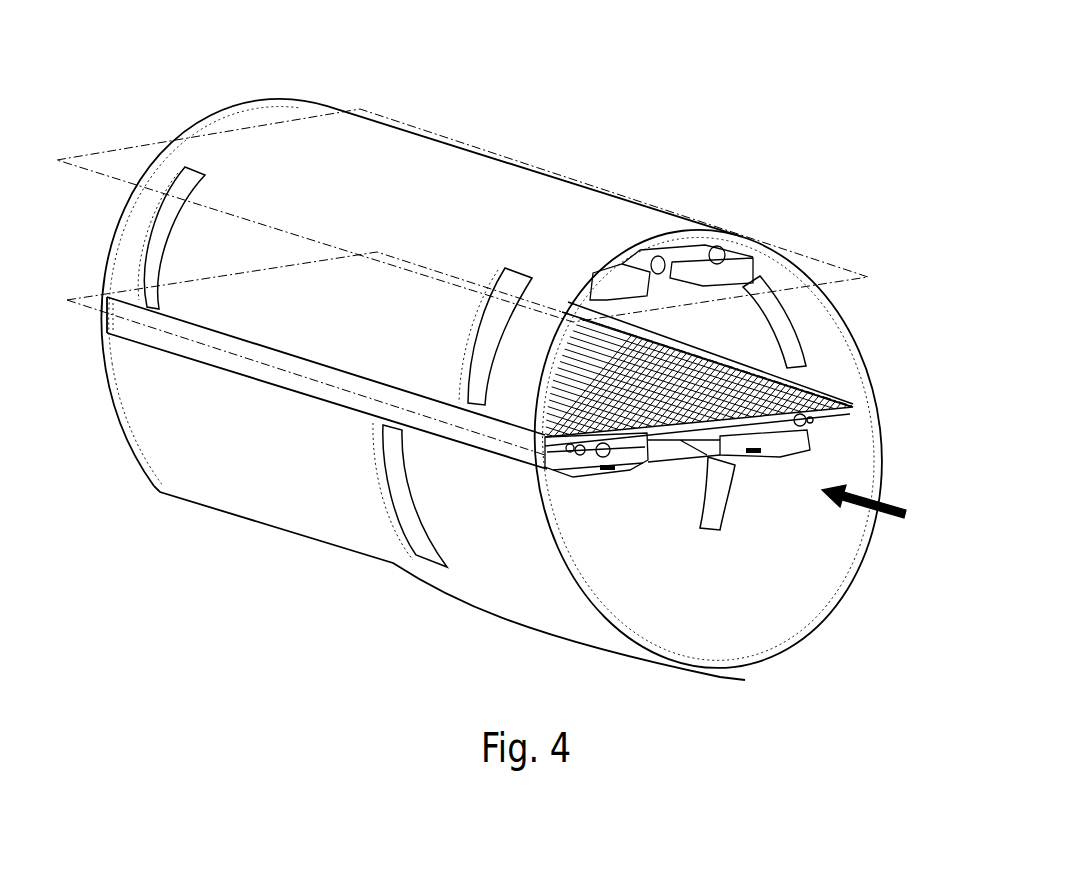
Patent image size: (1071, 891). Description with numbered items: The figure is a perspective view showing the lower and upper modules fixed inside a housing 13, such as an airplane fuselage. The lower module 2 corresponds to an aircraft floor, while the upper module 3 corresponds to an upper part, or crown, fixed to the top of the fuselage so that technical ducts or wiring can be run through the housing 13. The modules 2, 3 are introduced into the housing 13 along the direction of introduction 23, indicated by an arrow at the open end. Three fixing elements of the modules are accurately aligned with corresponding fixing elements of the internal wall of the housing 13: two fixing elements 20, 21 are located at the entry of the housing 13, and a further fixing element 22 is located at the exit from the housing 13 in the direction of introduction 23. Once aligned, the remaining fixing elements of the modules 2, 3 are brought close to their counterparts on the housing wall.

The housing 13 is at (432, 140).
The fixing element 22 is at (100, 316).
The upper module 3 is at (727, 265).
The fixing element 20 is at (855, 407).
The lower module 2 is at (827, 418).
The fixing element 21 is at (545, 438).
The direction of introduction 23 is at (893, 520).